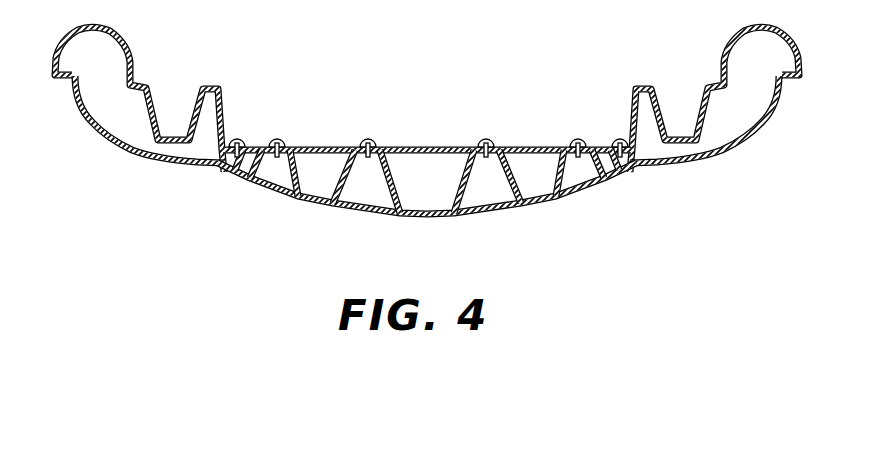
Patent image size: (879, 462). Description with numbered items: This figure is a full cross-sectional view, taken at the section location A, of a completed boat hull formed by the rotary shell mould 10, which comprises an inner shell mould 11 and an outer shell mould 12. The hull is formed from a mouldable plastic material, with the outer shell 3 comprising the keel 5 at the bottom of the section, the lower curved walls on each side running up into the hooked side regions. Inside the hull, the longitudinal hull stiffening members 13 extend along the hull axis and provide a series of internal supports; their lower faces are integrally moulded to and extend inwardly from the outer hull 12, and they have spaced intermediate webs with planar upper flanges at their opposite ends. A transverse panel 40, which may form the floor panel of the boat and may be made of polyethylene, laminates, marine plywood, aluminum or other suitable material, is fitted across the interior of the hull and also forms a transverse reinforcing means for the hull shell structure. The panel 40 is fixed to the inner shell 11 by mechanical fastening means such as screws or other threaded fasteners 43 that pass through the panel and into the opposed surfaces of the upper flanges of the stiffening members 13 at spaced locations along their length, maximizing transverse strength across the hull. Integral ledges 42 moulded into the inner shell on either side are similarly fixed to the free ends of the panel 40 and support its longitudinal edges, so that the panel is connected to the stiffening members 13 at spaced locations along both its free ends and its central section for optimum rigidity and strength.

The rotary shell mould 10 is at (144, 32).
The inner shell mould 11 is at (727, 52).
The outer shell mould 12 is at (750, 137).
The outer shell 3 is at (93, 133).
The integral ledges 42 is at (212, 165).
The transverse panel 40 is at (330, 145).
The threaded fasteners 43 is at (233, 146).
The hull stiffening members 13 is at (362, 172).
The keel 5 is at (417, 212).
The section line A— A is at (435, 74).